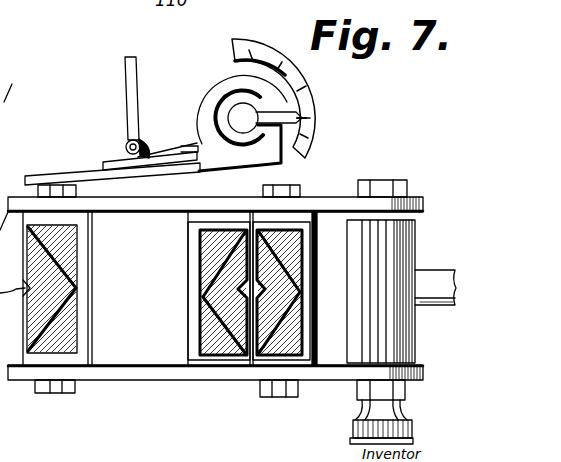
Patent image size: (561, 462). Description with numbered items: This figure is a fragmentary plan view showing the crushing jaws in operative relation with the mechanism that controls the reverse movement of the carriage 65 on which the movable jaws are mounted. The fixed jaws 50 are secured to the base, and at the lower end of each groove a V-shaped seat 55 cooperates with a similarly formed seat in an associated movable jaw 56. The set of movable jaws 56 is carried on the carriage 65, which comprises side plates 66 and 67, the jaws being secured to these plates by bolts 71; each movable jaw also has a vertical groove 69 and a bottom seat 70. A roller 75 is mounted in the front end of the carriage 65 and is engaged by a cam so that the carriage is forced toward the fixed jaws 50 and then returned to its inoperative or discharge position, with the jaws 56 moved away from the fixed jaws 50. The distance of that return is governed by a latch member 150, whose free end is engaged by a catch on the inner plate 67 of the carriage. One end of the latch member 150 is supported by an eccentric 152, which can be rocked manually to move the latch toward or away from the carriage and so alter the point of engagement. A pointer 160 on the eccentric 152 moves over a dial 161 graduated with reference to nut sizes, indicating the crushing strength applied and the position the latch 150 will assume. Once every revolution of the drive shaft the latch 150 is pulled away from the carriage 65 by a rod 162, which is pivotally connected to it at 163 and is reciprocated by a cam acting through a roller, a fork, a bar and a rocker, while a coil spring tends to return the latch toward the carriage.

The fixed jaws 50 is at (218, 345).
The V-shaped seat 55 is at (210, 297).
The movable jaws 56 is at (47, 340).
The carriage 65 is at (150, 378).
The side plate 66 is at (107, 372).
The side plate 67 is at (145, 213).
The vertical groove 69 is at (80, 287).
The bottom seat 70 is at (283, 278).
The bolts 71 is at (303, 188).
The roller 75 is at (412, 248).
The latch member 150 is at (68, 178).
The eccentric 152 is at (227, 138).
The pointer 160 is at (260, 103).
The dial 161 is at (262, 44).
The rod 162 is at (134, 116).
The pivot 163 is at (128, 143).